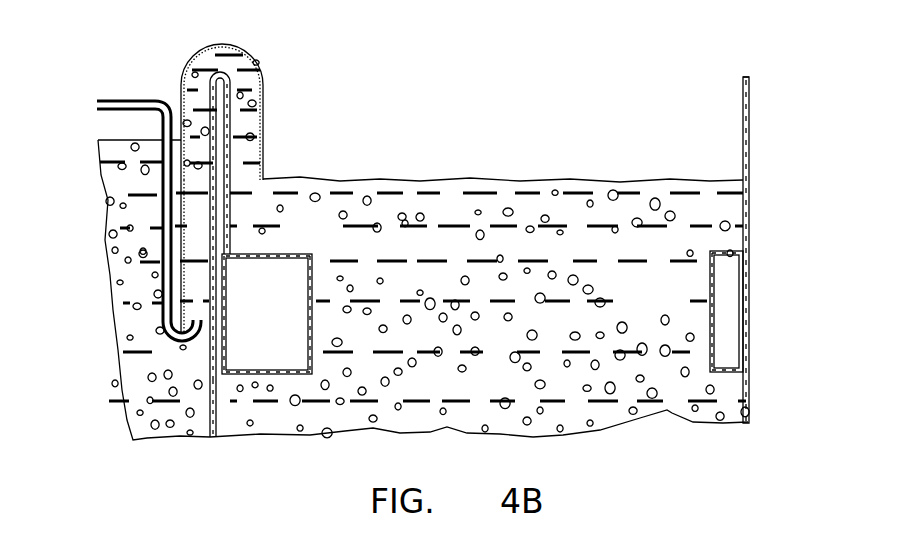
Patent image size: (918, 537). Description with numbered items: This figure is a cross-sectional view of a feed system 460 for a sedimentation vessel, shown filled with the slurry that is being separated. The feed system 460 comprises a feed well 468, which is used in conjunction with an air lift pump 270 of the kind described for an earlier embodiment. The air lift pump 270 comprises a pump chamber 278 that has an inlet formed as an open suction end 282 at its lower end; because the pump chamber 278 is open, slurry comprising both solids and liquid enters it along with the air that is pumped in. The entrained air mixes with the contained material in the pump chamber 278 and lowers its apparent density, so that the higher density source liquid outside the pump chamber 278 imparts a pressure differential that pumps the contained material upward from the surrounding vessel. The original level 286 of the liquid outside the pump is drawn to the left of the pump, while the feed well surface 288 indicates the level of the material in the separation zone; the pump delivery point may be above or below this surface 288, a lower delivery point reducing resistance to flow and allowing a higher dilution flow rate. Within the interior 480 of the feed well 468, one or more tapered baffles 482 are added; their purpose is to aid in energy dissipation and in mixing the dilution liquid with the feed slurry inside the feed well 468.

The air lift pump 270 is at (150, 100).
The pump chamber 278 is at (248, 53).
The open suction end 282 is at (212, 437).
The original level 286 is at (130, 142).
The feed well surface 288 is at (282, 178).
The feed system 460 is at (752, 104).
The feed well 468 is at (751, 148).
The interior 480 is at (222, 128).
The tapered baffles 482 is at (268, 282).